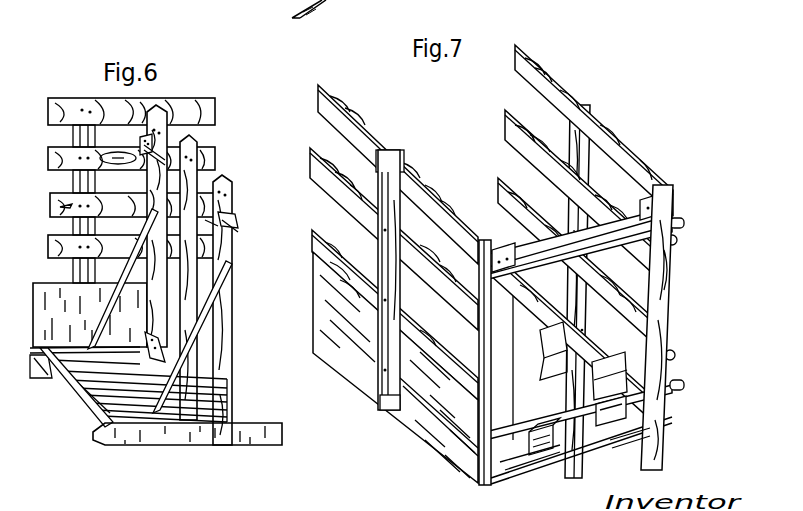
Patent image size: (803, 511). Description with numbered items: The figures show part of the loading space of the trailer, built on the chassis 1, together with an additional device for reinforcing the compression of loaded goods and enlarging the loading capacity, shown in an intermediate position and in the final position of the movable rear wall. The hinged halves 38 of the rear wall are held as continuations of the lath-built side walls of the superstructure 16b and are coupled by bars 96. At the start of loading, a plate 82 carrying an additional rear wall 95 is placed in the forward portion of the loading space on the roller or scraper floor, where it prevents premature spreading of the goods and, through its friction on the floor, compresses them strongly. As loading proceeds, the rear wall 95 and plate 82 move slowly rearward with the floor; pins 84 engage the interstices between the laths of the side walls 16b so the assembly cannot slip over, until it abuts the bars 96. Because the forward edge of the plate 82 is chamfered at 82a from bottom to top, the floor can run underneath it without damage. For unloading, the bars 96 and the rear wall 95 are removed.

In FIG. 6, the chassis 1 is at (255, 440).
In FIG. 6, the superstructure 16b is at (212, 150).
In FIG. 7, the superstructure 16b is at (363, 127).
In FIG. 7, the hinged halves of the rear wall 38 is at (640, 167).
In FIG. 6, the plate 82 is at (78, 393).
In FIG. 7, the plate 82 is at (563, 437).
In FIG. 6, the chamfered forward edge 82a is at (95, 418).
In FIG. 6, the pins 84 is at (140, 143).
In FIG. 7, the pins 84 is at (478, 264).
In FIG. 6, the additional rear wall 95 is at (228, 263).
In FIG. 7, the additional rear wall 95 is at (655, 312).
In FIG. 7, the bars 96 is at (672, 257).